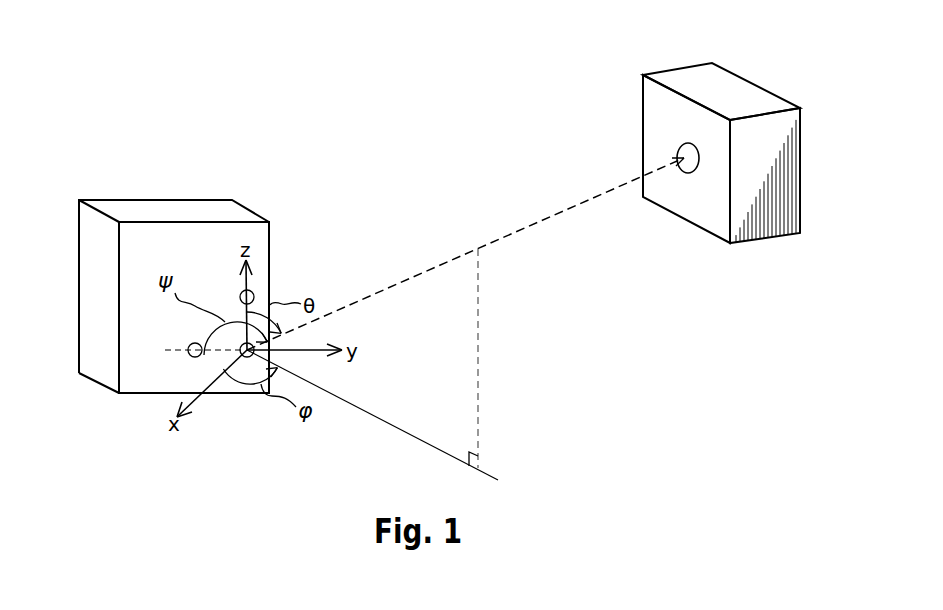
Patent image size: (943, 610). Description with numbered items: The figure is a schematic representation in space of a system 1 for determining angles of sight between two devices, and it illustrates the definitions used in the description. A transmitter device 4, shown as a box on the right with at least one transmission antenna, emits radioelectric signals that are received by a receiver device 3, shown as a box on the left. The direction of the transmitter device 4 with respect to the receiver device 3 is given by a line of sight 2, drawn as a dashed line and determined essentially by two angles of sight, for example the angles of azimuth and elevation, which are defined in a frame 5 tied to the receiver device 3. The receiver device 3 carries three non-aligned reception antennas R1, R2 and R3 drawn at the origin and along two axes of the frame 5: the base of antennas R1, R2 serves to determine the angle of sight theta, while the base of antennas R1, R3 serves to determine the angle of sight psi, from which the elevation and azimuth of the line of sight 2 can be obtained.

The system for determining angles of sight 1 is at (320, 158).
The line of sight 2 is at (585, 202).
The receiver device 3 is at (146, 343).
The transmitter device 4 is at (738, 87).
The frame 5 is at (199, 394).
The reception antenna R1 is at (245, 357).
The reception antenna R2 is at (254, 297).
The reception antenna R3 is at (195, 357).